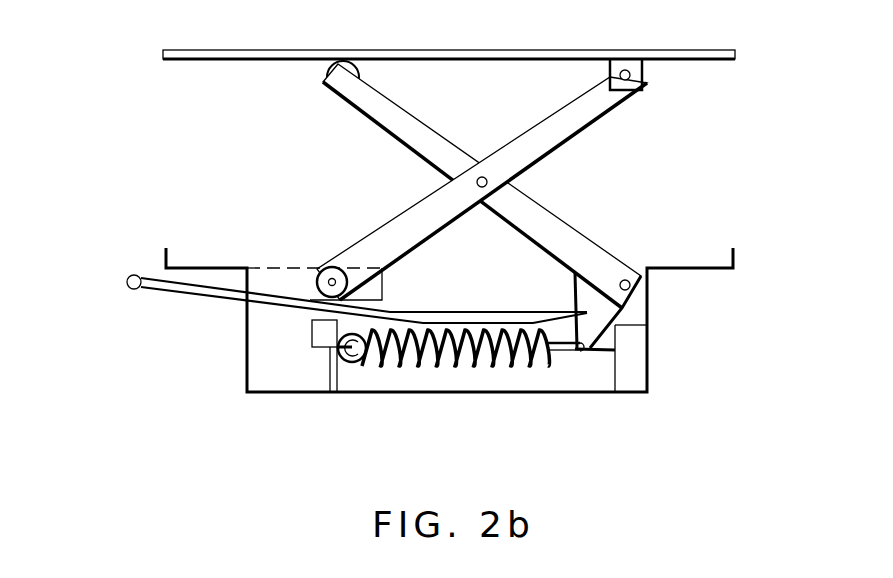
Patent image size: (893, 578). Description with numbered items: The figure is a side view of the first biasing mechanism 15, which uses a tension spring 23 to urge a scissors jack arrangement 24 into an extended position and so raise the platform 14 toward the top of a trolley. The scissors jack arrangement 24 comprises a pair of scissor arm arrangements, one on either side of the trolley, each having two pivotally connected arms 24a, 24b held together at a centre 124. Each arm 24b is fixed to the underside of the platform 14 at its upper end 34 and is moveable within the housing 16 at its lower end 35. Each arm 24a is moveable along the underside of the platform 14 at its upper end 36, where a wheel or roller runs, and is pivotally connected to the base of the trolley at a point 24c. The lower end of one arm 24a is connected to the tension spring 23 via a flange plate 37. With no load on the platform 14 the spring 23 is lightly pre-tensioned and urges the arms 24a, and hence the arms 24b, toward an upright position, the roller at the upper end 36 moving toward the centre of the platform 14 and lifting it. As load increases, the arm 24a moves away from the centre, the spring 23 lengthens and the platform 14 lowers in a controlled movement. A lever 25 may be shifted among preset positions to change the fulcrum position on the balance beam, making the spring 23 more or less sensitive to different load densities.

The platform 14 is at (722, 52).
The first biasing mechanism 15 is at (192, 173).
The housing 16 is at (650, 365).
The tension spring 23 is at (392, 368).
The scissors jack arrangement 24 is at (528, 186).
The arm 24a is at (377, 100).
The arm 24b is at (570, 127).
The pivot point 24c is at (645, 273).
The lever 25 is at (155, 288).
The upper end of arm 24b 34 is at (631, 66).
The lower end of arm 24b 35 is at (328, 272).
The upper end of arm 24a 36 is at (340, 61).
The flange plate 37 is at (595, 318).
The centre 124 is at (490, 183).